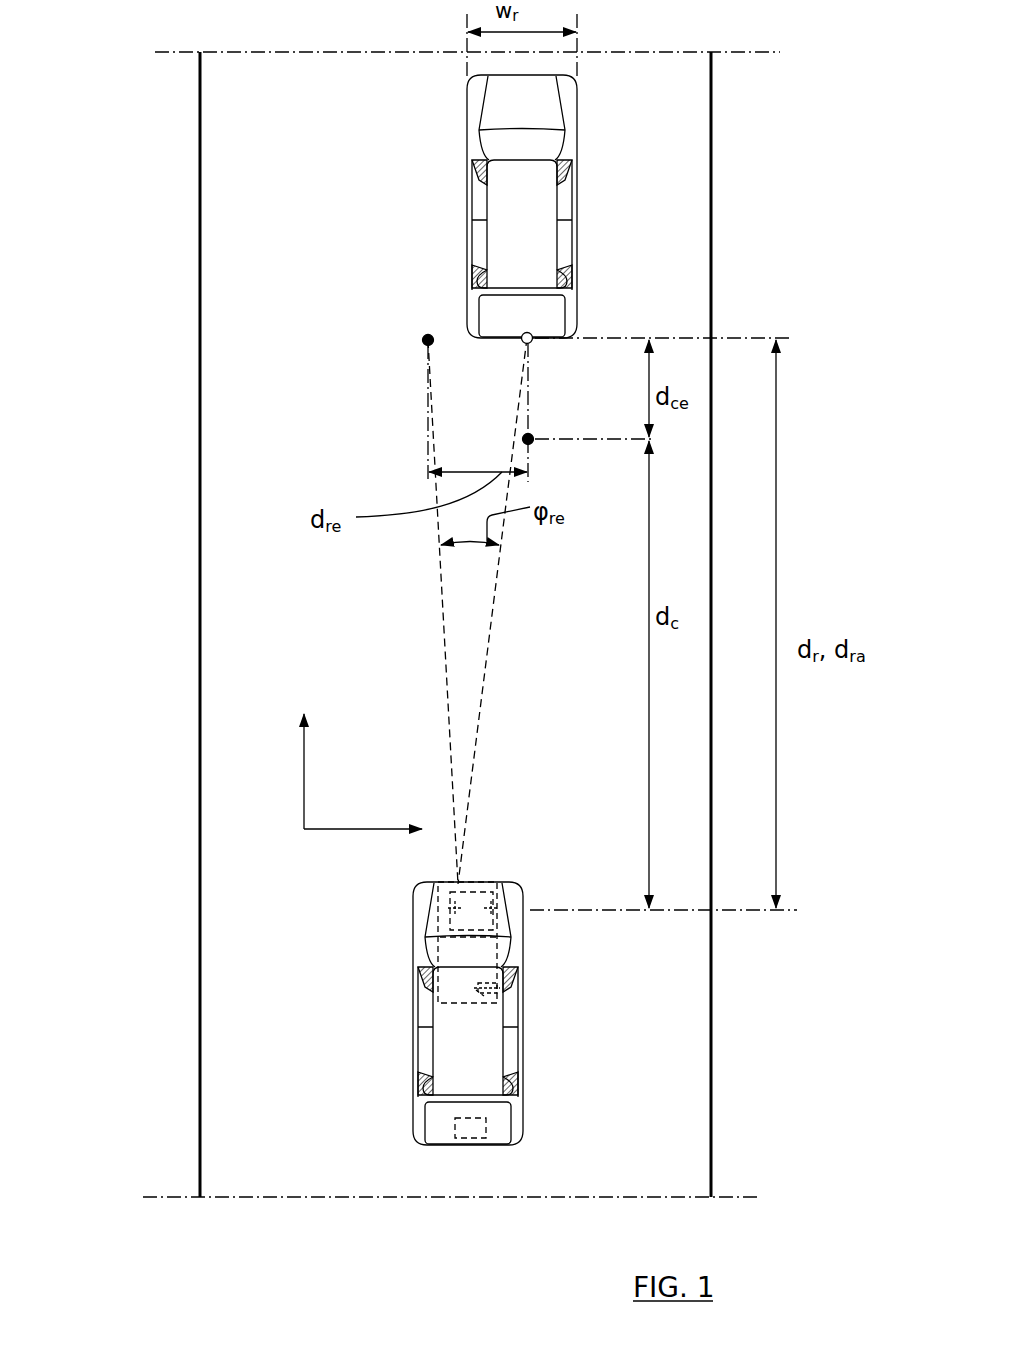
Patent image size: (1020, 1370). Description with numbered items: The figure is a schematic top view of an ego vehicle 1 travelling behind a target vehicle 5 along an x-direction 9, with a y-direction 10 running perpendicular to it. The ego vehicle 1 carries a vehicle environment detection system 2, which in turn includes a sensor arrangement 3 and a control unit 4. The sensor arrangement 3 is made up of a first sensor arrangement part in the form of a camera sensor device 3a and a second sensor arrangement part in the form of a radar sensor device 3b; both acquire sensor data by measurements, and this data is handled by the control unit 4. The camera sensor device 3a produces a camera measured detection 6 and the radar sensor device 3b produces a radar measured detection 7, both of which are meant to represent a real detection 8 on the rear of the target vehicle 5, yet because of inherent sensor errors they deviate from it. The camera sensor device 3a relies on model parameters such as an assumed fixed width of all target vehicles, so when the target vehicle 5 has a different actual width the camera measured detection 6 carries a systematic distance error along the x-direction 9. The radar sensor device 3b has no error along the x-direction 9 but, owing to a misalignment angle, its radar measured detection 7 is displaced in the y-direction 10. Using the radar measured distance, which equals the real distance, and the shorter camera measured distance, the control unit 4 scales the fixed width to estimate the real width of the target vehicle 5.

The ego vehicle 1 is at (455, 1025).
The vehicle environment detection system 2 is at (475, 997).
The sensor arrangement 3 is at (440, 935).
The camera sensor device 3a is at (525, 928).
The radar sensor device 3b is at (440, 905).
The control unit 4 is at (525, 985).
The target vehicle 5 is at (505, 210).
The camera measured detection 6 is at (528, 439).
The radar measured detection 7 is at (428, 340).
The real detection 8 is at (527, 338).
The x-direction 9 is at (304, 758).
The y-direction 10 is at (355, 829).